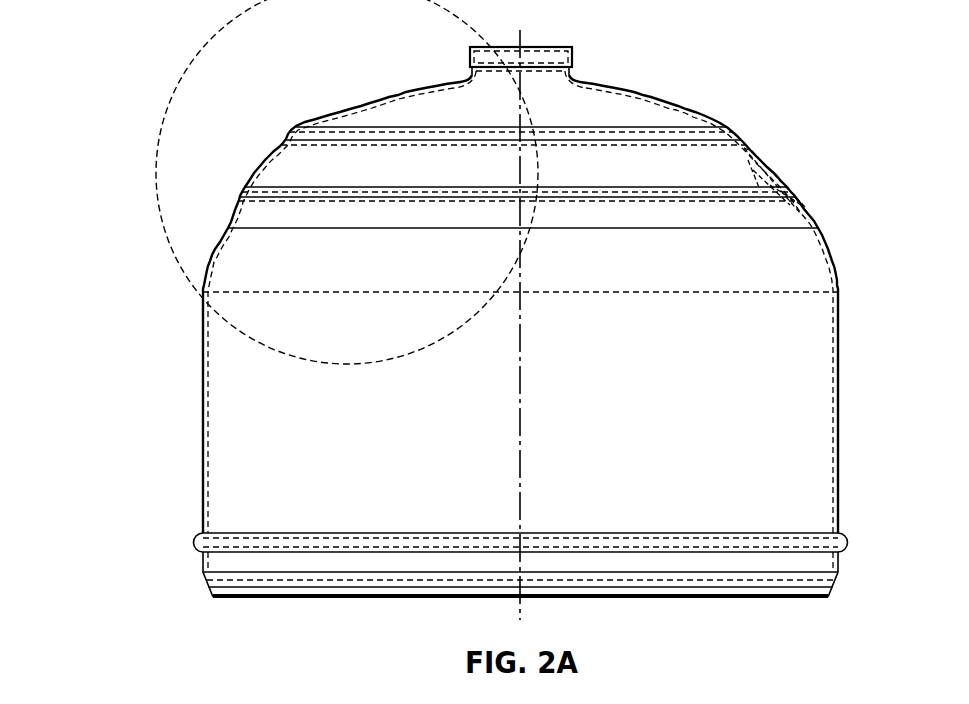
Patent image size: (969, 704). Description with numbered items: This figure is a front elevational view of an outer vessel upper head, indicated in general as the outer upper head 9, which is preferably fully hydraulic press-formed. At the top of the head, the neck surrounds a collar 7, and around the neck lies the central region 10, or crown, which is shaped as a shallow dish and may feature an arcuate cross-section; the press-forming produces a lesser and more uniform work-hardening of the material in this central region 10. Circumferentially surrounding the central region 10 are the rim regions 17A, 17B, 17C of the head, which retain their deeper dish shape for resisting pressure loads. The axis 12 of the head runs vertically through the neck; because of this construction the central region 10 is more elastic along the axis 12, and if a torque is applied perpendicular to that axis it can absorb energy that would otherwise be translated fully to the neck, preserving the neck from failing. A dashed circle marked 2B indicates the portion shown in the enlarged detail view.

The outer upper head 9 is at (766, 33).
The central region 10 is at (660, 98).
The collar 7 is at (573, 57).
The rim region 17A is at (268, 160).
The rim region 17B is at (232, 216).
The rim region 17C is at (208, 266).
The axis 12 is at (521, 381).
The detail view circle 2B is at (197, 53).